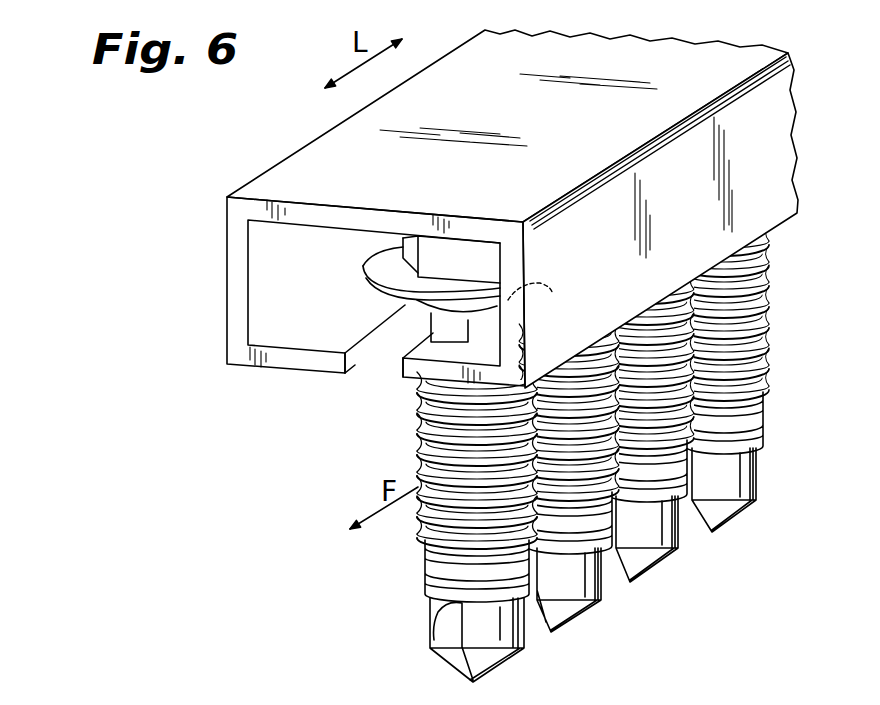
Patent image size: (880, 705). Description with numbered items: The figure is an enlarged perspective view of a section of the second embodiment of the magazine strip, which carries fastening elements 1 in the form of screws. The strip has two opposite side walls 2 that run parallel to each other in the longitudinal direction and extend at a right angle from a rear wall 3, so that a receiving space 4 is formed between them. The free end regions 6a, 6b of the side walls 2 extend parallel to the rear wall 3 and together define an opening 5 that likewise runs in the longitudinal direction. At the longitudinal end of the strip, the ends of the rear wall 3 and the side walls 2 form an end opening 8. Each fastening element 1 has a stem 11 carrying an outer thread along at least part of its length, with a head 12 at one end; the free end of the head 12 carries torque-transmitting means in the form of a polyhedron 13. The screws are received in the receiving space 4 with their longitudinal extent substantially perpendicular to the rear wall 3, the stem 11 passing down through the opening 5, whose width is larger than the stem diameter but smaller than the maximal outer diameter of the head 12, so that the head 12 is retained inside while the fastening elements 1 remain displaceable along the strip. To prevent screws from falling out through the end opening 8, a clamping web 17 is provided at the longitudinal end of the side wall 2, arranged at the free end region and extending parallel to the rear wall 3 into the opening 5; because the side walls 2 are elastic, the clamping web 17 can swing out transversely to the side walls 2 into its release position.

The fastening element 1 is at (594, 454).
The side wall 2 is at (779, 133).
The rear wall 3 is at (478, 62).
The receiving space 4 is at (333, 312).
The opening 5 is at (377, 375).
The end region 6a is at (555, 290).
The end region 6b is at (402, 298).
The end opening 8 is at (266, 296).
The stem 11 is at (427, 546).
The head 12 is at (463, 253).
The polyhedron 13 is at (413, 246).
The clamping web 17 is at (356, 375).